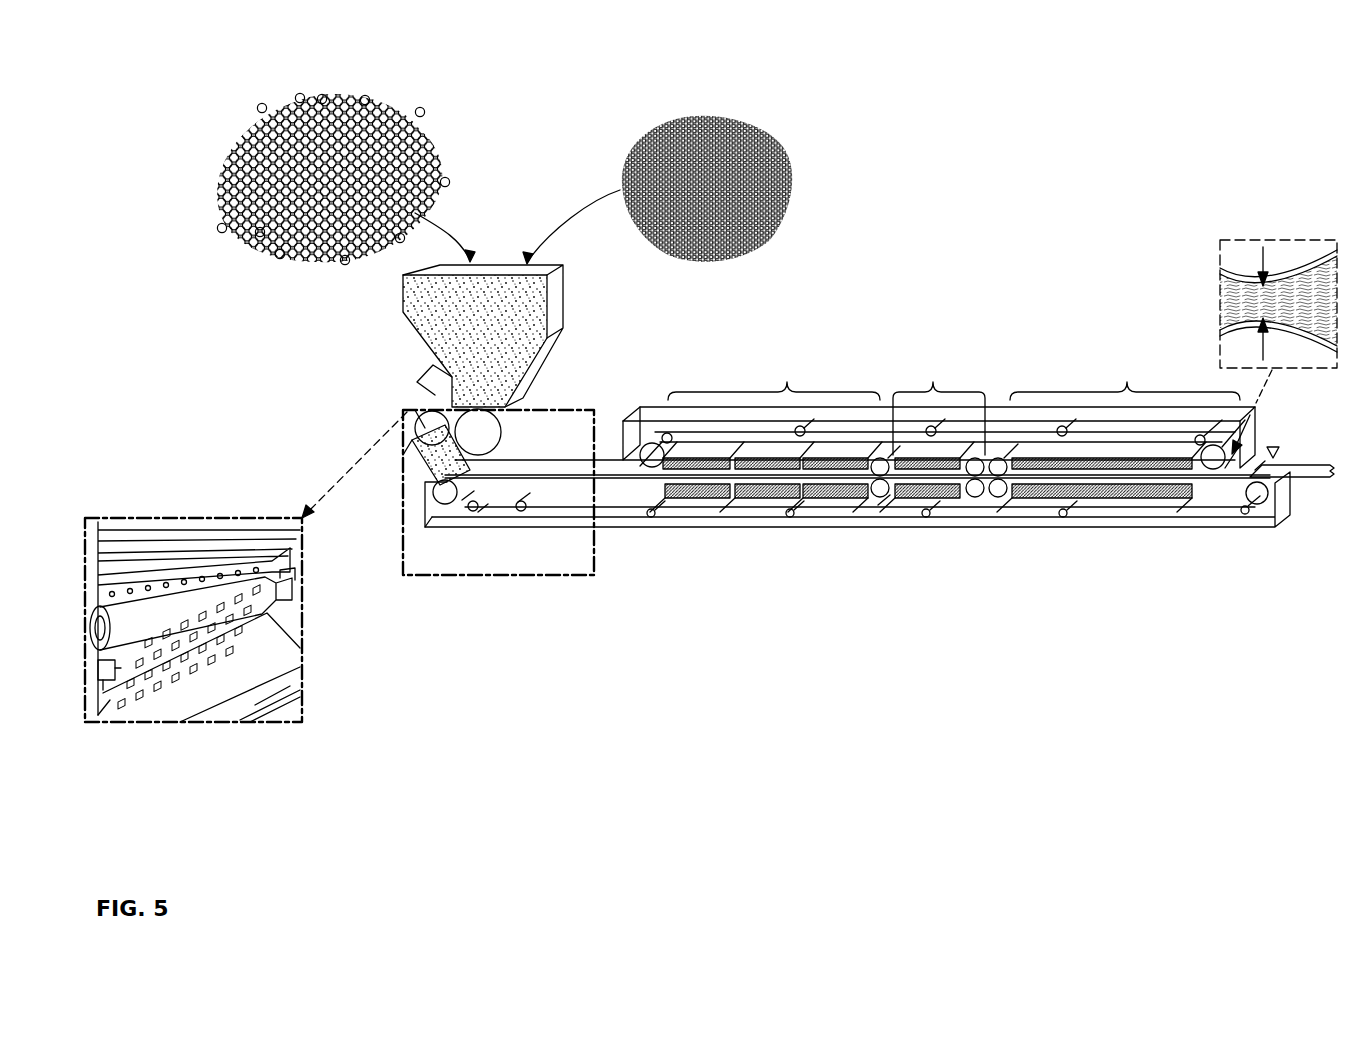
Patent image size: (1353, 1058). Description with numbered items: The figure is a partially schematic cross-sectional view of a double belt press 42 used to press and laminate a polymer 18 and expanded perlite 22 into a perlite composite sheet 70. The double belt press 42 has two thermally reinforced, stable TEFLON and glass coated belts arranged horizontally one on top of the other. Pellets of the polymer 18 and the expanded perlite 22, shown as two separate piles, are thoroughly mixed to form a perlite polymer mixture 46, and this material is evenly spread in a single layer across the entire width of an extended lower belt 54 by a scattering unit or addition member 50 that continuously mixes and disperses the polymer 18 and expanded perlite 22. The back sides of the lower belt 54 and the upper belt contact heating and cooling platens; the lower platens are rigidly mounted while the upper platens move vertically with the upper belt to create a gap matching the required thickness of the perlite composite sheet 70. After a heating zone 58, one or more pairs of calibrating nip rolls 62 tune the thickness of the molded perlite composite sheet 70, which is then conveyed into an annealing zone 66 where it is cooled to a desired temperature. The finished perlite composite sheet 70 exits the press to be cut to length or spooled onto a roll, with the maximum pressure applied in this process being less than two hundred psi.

The polymer 18 is at (343, 110).
The expanded perlite 22 is at (705, 145).
The double belt press 42 is at (899, 200).
The perlite polymer mixture 46 is at (440, 458).
The addition member 50 is at (545, 308).
The lower belt 54 is at (551, 464).
The heating zone 58 is at (761, 434).
The calibrating nip rolls 62 is at (944, 428).
The annealing zone 66 is at (1062, 434).
The perlite composite sheet 70 is at (1300, 466).